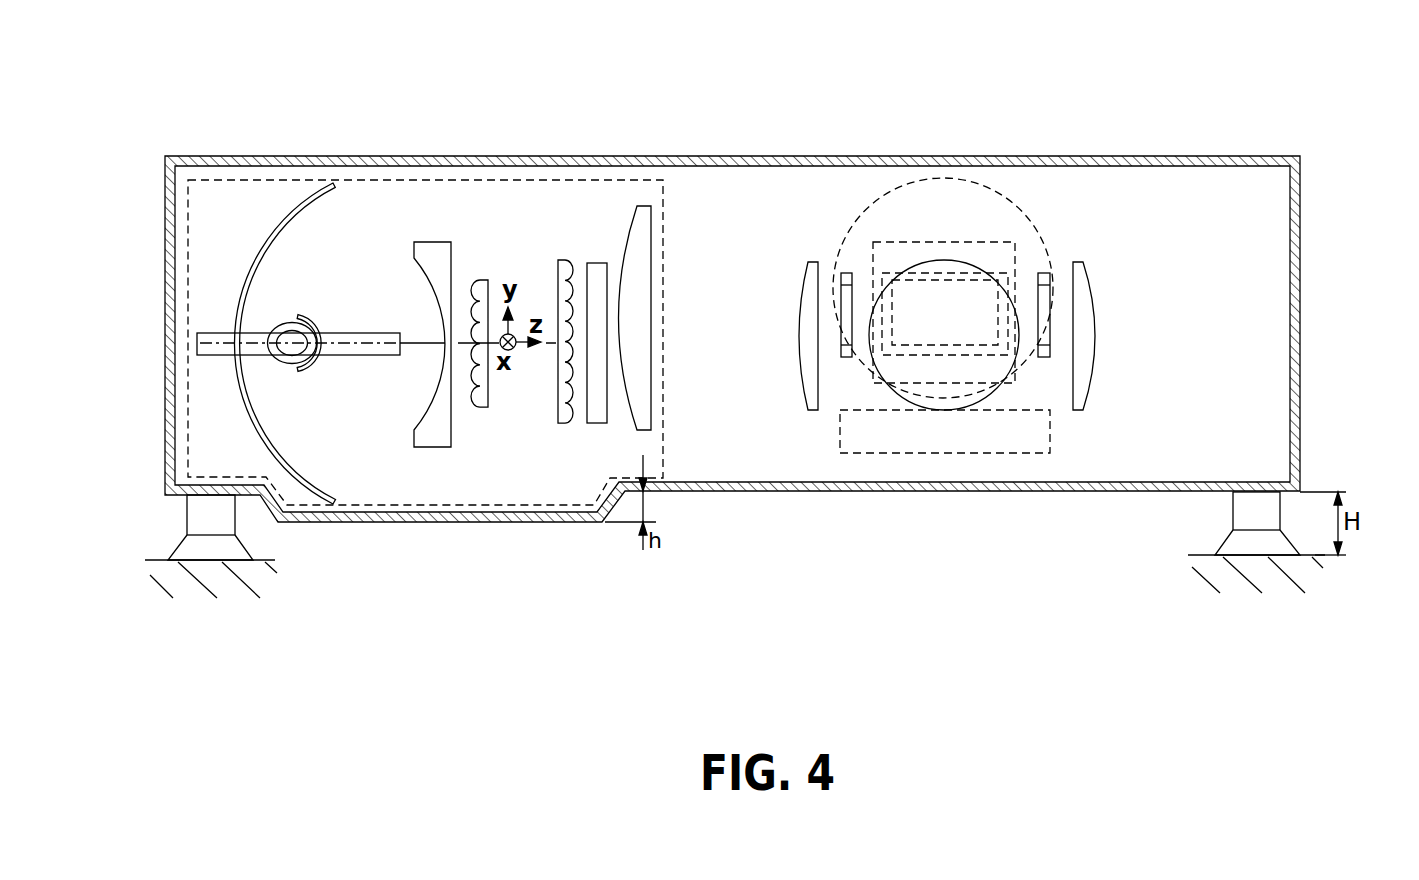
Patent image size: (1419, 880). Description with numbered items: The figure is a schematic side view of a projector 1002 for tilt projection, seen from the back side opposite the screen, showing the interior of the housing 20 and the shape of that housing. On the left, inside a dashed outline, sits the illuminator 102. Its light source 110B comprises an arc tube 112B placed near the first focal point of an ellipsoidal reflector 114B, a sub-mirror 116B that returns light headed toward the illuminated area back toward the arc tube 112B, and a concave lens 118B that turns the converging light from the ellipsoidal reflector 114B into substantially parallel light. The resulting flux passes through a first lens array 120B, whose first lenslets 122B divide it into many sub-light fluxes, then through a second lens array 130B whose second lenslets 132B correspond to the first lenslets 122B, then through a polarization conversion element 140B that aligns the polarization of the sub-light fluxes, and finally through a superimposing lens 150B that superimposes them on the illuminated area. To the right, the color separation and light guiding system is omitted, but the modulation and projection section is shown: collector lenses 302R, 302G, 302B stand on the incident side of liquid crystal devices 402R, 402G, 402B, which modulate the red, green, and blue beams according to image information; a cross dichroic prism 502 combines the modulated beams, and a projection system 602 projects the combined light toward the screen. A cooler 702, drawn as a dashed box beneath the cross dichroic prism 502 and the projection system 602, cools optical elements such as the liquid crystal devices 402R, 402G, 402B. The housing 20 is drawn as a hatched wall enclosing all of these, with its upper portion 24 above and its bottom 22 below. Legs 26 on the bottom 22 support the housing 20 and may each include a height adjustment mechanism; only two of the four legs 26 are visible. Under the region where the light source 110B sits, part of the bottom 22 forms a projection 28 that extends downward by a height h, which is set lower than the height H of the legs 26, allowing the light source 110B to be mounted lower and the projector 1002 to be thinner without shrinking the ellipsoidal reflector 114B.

The projector 1002 is at (1340, 54).
The illuminator 102 is at (730, 55).
The light source 110B is at (443, 104).
The arc tube 112B is at (292, 323).
The ellipsoidal reflector 114B is at (257, 248).
The sub-mirror 116B is at (318, 314).
The concave lens 118B is at (433, 242).
The first lens array 120B is at (481, 280).
The first lenslets 122B is at (472, 403).
The second lens array 130B is at (563, 260).
The second lenslets 132B is at (568, 424).
The polarization conversion element 140B is at (592, 263).
The superimposing lens 150B is at (643, 206).
The housing 20 is at (1312, 210).
The bottom of the housing 22 is at (790, 492).
The top plate of housing 24 is at (748, 156).
The legs 26 is at (188, 503).
The projection 28 is at (478, 524).
The collector lens 302R is at (811, 411).
The collector lens 302G is at (930, 263).
The collector lens 302B is at (1077, 262).
The liquid crystal device 402R is at (845, 272).
The liquid crystal device 402G is at (928, 268).
The liquid crystal device 402B is at (1045, 273).
The cross dichroic prism 502 is at (960, 272).
The projection system 602 is at (940, 178).
The cooler 702 is at (1050, 430).